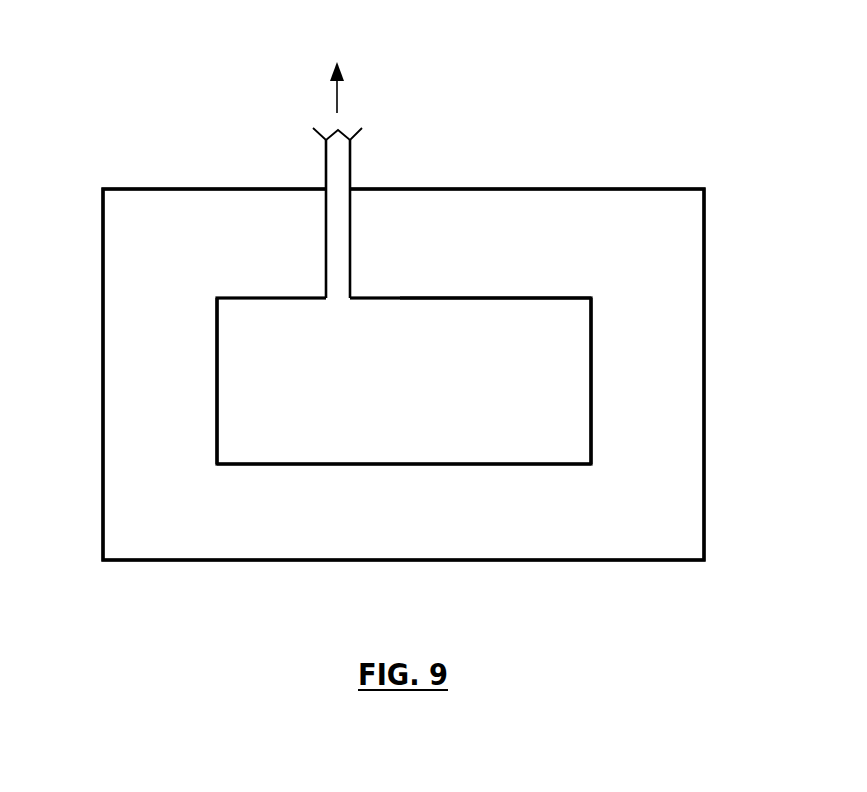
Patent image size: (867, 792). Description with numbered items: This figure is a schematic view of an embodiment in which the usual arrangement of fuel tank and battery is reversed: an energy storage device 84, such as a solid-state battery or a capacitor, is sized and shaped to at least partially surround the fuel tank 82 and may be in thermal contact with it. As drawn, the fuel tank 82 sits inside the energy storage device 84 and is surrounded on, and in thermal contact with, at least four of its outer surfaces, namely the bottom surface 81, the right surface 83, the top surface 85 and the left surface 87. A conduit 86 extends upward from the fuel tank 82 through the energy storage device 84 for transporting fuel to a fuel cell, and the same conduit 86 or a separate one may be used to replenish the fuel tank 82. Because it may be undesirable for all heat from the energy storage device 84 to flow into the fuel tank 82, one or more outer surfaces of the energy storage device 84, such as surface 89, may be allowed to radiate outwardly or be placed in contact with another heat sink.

The outer surface of fuel tank 81 is at (527, 478).
The fuel tank 82 is at (293, 297).
The outer surface of fuel tank 83 is at (603, 396).
The energy storage device 84 is at (450, 187).
The outer surface of fuel tank 85 is at (532, 294).
The conduit 86 is at (326, 167).
The outer surface of fuel tank 87 is at (205, 367).
The outer surface of energy storage device 89 is at (152, 563).